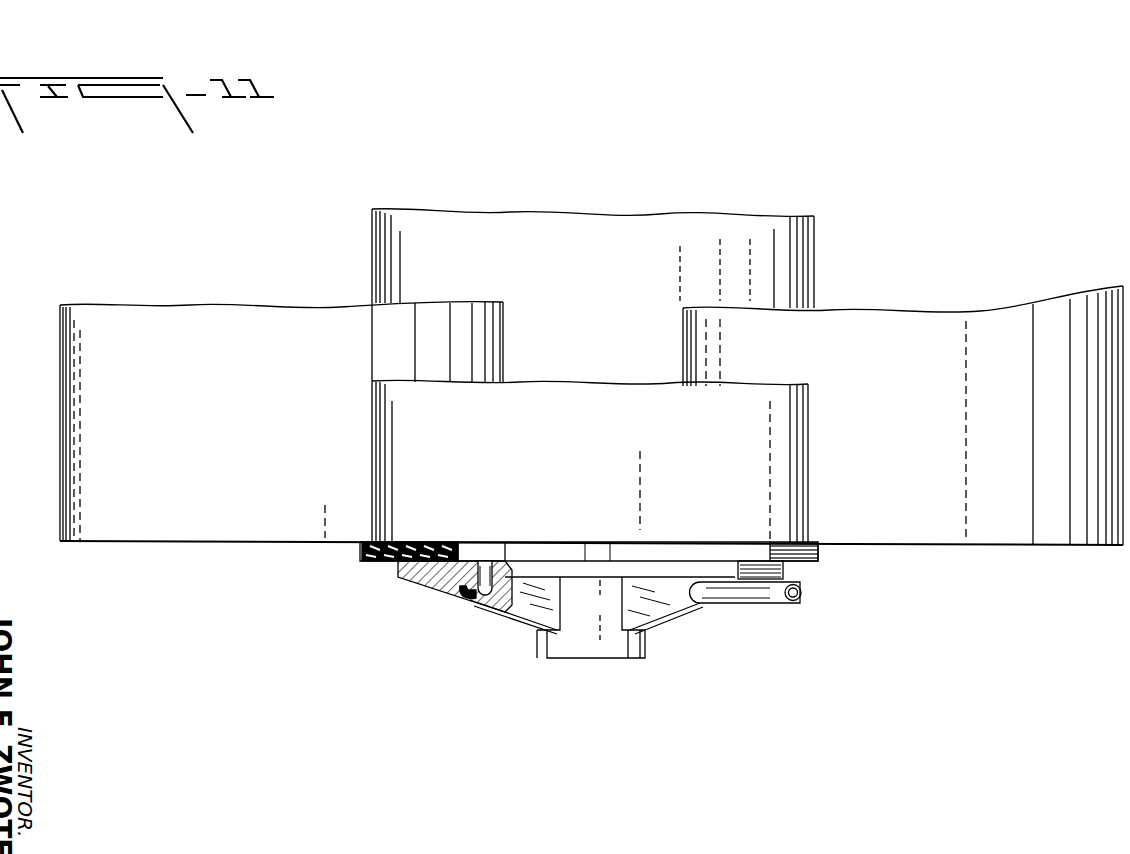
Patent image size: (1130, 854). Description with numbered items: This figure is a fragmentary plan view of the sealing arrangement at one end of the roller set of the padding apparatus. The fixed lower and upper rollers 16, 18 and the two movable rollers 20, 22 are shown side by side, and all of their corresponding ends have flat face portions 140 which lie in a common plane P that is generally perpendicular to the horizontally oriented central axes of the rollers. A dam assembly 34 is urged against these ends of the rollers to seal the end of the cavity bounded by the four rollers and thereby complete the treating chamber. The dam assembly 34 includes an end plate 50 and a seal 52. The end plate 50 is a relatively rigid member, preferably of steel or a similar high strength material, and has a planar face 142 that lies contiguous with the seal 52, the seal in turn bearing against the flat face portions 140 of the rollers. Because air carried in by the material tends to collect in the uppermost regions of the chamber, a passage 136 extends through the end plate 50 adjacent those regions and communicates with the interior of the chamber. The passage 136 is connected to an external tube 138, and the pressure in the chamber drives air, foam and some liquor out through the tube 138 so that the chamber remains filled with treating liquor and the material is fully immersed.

The lower roller 16 is at (690, 240).
The upper roller 18 is at (610, 402).
The movable roller 20 is at (998, 317).
The movable roller 22 is at (165, 322).
The dam assembly 34 is at (520, 618).
The end plate 50 is at (662, 578).
The seal 52 is at (820, 562).
The passage 136 is at (478, 592).
The external tube 138 is at (760, 604).
The flat face portion 140 is at (203, 542).
The planar face 142 is at (612, 545).
The common plane P is at (918, 546).